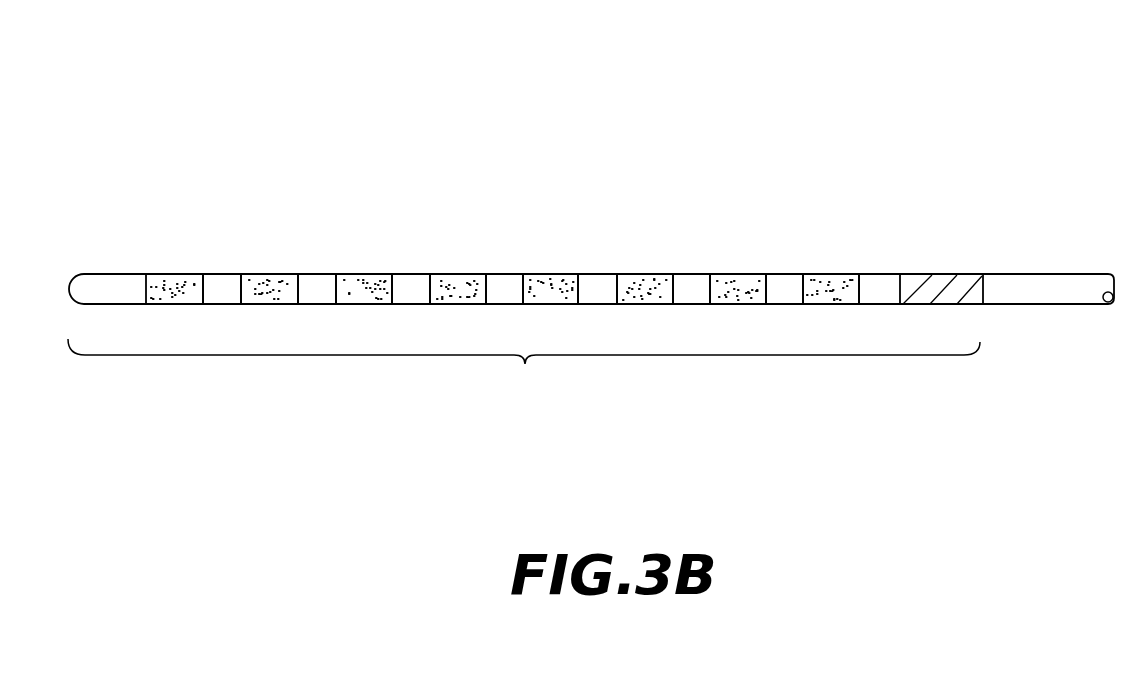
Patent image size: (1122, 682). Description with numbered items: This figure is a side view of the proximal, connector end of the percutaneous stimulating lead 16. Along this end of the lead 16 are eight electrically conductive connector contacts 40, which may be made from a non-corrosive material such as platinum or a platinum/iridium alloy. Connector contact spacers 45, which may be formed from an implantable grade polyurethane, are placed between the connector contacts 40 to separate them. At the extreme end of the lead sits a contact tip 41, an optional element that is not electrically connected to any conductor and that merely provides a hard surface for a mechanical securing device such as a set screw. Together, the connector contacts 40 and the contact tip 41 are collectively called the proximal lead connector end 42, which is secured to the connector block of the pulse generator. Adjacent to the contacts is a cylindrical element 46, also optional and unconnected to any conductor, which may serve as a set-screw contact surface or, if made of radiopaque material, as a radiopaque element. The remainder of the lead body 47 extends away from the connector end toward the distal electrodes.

The stimulating lead 16 is at (877, 145).
The connector contacts 40 is at (173, 274).
The contact tip 41 is at (113, 274).
The proximal lead connector end 42 is at (525, 366).
The connector contact spacers 45 is at (222, 274).
The cylindrical element 46 is at (940, 274).
The catheter shaft 47 is at (1038, 305).